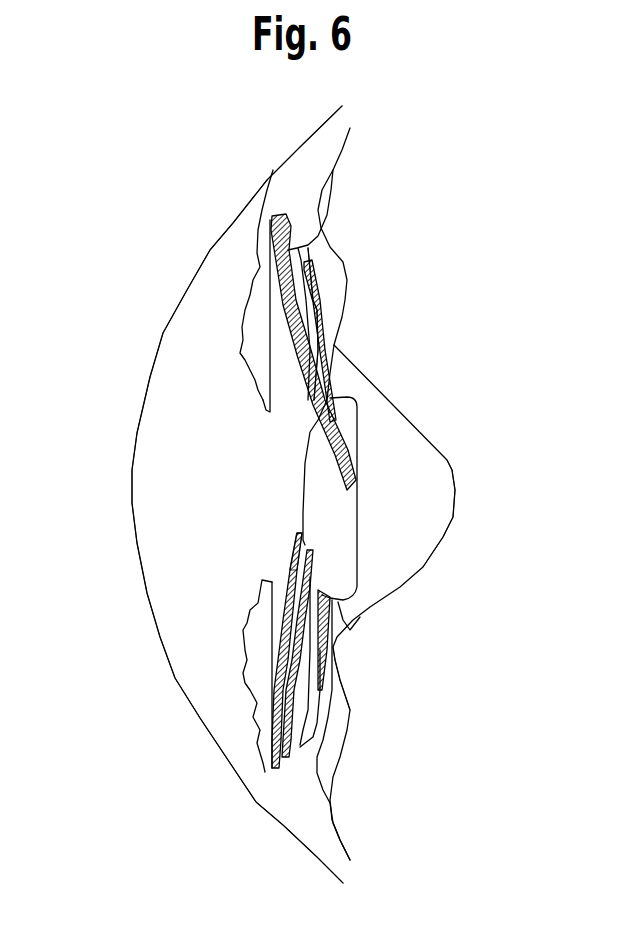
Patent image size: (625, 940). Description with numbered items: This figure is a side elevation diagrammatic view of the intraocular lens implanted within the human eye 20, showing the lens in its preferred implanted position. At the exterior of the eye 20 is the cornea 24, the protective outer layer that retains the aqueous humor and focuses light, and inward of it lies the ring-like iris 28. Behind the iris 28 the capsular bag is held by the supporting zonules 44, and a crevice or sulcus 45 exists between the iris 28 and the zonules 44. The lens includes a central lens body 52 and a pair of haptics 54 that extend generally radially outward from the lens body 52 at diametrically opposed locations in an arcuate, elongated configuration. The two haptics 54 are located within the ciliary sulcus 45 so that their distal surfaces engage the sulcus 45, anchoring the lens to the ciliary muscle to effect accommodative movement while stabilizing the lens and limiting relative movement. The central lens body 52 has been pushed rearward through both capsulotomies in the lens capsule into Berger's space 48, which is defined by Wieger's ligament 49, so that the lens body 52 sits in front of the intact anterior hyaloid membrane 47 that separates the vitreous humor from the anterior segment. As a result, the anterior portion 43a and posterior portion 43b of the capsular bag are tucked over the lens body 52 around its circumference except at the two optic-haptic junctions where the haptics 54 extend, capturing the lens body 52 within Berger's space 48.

The eye 20 is at (142, 748).
The cornea 24 is at (163, 328).
The iris 28 is at (250, 360).
The anterior portion 43a is at (335, 317).
The posterior portion 43b is at (325, 372).
The zonules 44 is at (268, 270).
The sulcus 45 is at (270, 795).
The anterior hyaloid membrane 47 is at (427, 568).
The Berger's space 48 is at (434, 481).
The Wieger's ligament 49 is at (371, 653).
The central lens body 52 is at (337, 498).
The haptics 54 is at (271, 630).